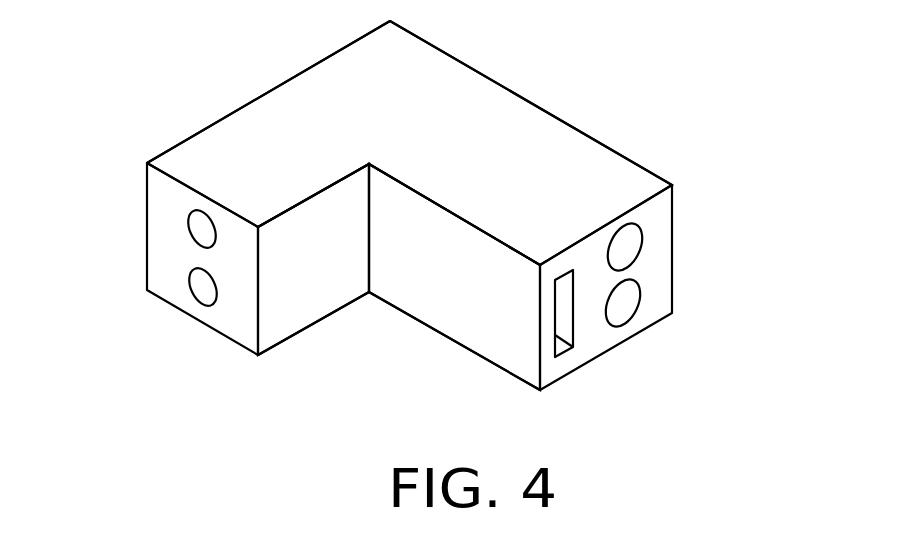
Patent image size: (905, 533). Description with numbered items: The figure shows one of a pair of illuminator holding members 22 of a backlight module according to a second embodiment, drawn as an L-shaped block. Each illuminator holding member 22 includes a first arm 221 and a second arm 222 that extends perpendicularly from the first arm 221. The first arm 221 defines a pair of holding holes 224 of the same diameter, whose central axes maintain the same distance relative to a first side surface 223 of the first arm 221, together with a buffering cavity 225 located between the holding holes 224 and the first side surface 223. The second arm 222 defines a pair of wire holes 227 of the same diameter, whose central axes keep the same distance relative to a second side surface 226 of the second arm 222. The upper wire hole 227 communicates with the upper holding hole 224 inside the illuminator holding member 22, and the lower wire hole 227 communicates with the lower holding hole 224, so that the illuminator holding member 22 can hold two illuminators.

The illuminator holding member 22 is at (500, 60).
The first arm 221 is at (589, 173).
The second arm 222 is at (218, 163).
The first side surface 223 is at (473, 322).
The holding holes 224 is at (623, 242).
The buffering cavity 225 is at (565, 317).
The second side surface 226 is at (288, 307).
The wire holes 227 is at (198, 227).